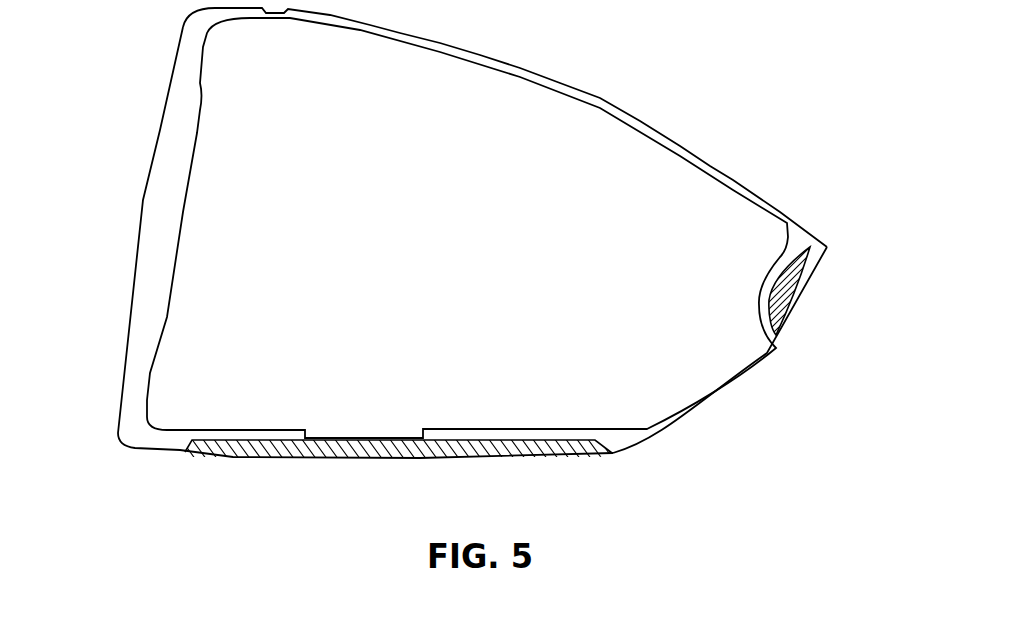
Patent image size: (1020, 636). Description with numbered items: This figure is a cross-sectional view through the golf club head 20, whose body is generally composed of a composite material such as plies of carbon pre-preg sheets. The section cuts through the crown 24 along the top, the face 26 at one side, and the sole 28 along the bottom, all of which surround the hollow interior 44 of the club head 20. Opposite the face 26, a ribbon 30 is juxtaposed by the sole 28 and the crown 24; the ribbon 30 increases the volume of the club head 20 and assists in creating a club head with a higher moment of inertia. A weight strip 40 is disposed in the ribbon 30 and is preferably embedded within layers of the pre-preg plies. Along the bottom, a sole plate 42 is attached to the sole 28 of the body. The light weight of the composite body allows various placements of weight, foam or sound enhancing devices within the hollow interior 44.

The golf club head 20 is at (593, 70).
The crown 24 is at (472, 45).
The face 26 is at (152, 165).
The sole 28 is at (613, 455).
The ribbon 30 is at (817, 275).
The weight strip 40 is at (782, 307).
The sole plate 42 is at (397, 458).
The hollow interior 44 is at (642, 163).